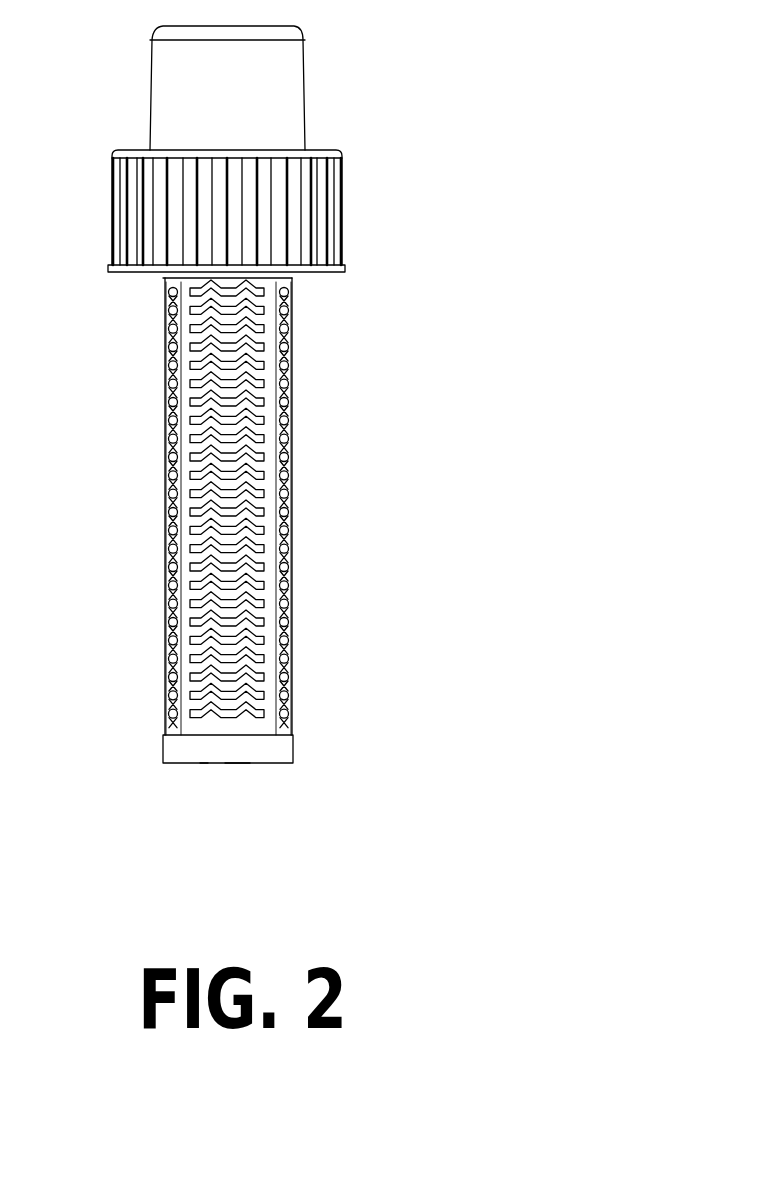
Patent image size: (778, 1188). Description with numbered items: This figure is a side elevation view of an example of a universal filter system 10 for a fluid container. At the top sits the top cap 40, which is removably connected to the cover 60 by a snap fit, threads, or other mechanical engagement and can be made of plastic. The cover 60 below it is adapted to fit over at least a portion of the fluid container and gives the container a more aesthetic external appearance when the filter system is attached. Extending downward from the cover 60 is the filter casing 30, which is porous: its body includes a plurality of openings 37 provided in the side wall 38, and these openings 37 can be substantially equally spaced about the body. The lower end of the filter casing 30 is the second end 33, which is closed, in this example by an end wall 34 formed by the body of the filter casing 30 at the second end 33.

The universal filter system 10 is at (485, 133).
The top cap 40 is at (305, 47).
The cover 60 is at (347, 257).
The filter casing 30 is at (318, 715).
The openings 37 is at (195, 678).
The side wall 38 is at (188, 728).
The end wall 34 is at (204, 763).
The second end 33 is at (237, 775).